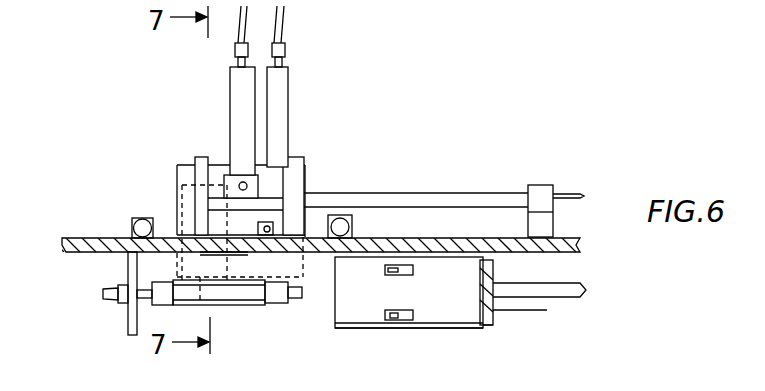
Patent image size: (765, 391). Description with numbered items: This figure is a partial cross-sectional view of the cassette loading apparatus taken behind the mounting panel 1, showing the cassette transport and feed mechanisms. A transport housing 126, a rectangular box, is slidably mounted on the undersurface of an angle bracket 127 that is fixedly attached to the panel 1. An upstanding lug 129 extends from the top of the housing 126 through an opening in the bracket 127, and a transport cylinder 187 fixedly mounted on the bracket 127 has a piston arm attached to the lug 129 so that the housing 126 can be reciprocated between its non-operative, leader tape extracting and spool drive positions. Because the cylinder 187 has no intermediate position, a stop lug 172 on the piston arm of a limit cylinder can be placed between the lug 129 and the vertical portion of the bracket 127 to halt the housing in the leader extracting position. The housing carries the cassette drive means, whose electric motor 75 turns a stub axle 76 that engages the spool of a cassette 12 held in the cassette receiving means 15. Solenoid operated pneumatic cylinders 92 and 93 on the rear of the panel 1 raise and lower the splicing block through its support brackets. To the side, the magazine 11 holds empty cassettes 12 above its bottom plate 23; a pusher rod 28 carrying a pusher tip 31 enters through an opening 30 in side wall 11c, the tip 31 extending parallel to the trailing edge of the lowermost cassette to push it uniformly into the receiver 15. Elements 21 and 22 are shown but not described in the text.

The mounting panel 1 is at (84, 254).
The magazine 11 is at (478, 327).
The side wall of magazine 11c is at (488, 322).
The cassette 12 is at (298, 299).
The cassette receiving means 15 is at (264, 306).
The lower sensor 21 is at (413, 313).
The upper sensor 22 is at (413, 268).
The bottom plate 23 is at (373, 305).
The pusher rod 28 is at (518, 283).
The opening 30 is at (482, 290).
The pusher tip 31 is at (500, 309).
The electric motor 75 is at (180, 202).
The stub axle 76 is at (197, 256).
The pneumatic cylinder 92 is at (132, 217).
The pneumatic cylinder 93 is at (352, 222).
The housing 126 is at (177, 166).
The angle bracket 127 is at (289, 170).
The upstanding lug 129 is at (270, 200).
The stop lug 172 is at (249, 232).
The transport cylinder 187 is at (230, 104).